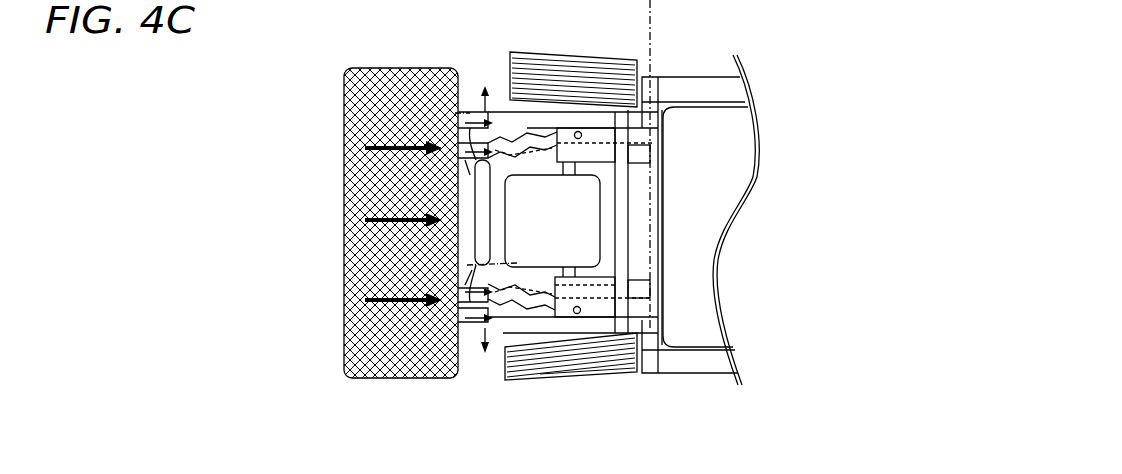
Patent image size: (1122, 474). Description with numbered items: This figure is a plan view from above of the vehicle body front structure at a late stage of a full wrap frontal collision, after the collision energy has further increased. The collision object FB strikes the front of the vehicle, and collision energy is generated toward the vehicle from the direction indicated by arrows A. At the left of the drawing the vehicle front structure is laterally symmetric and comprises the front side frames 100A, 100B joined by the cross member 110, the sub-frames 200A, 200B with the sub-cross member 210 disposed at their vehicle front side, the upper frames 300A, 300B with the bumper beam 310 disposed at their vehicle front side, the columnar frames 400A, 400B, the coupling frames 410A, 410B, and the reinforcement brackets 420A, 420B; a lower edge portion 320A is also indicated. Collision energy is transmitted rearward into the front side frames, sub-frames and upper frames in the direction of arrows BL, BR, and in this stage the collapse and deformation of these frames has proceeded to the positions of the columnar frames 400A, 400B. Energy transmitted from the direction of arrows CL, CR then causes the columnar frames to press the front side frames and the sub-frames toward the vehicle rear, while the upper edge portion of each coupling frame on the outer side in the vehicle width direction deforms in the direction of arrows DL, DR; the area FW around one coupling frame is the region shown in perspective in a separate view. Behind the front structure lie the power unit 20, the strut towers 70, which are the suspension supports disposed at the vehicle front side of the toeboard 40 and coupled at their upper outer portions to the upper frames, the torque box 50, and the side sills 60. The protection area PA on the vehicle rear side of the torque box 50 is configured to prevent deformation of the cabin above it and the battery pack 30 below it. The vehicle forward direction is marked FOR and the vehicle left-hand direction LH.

The power unit 20 is at (592, 240).
The battery pack 30 is at (690, 292).
The toeboard 40 is at (620, 217).
The torque box 50 is at (645, 172).
The side sill 60 is at (687, 95).
The strut tower 70 is at (620, 135).
The cross member 110 is at (483, 218).
The front side frame 100A is at (478, 283).
The front side frame 100B is at (470, 152).
The sub-frame 200A is at (597, 292).
The sub-frame 200B is at (587, 122).
The sub-cross member 210 is at (343, 248).
The upper frame 300A is at (633, 323).
The upper frame 300B is at (637, 95).
The bumper beam 310 is at (467, 238).
The lower edge portion 320A is at (342, 368).
The columnar frame 400A is at (418, 378).
The columnar frame 400B is at (410, 72).
The coupling frame 410A is at (458, 378).
The coupling frame 410B is at (450, 72).
The reinforcement bracket 420A is at (588, 337).
The reinforcement bracket 420B is at (543, 108).
The arrows A is at (373, 145).
The collision object FB is at (345, 74).
The arrow CL is at (478, 110).
The arrow CR is at (480, 330).
The arrow DL is at (498, 107).
The arrow DR is at (512, 382).
The arrow BL is at (490, 167).
The arrow BR is at (508, 250).
The protection area PA is at (655, 15).
The area FW is at (488, 392).
The left-hand direction LH is at (918, 350).
The forward direction FOR is at (918, 350).